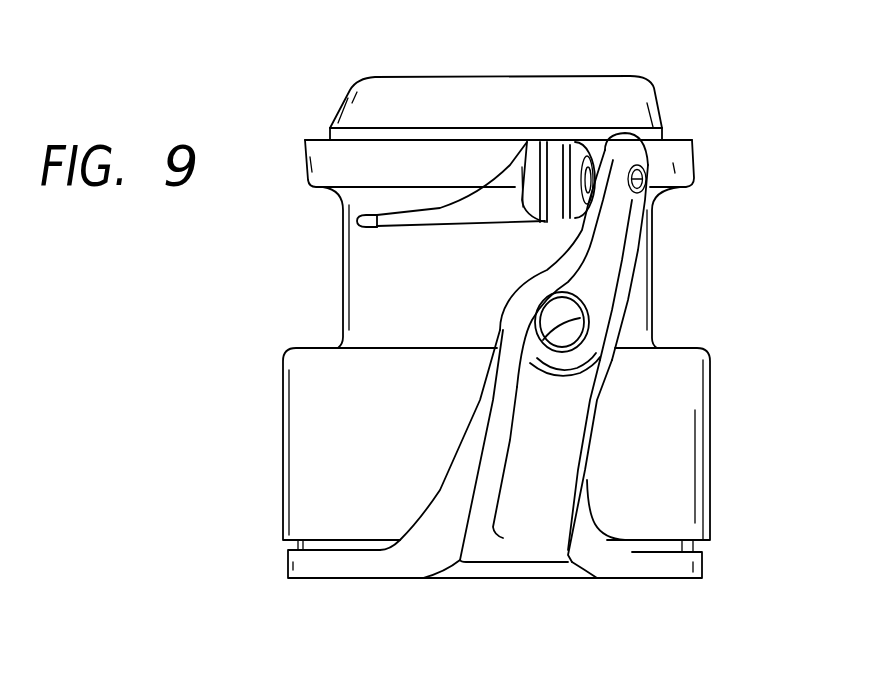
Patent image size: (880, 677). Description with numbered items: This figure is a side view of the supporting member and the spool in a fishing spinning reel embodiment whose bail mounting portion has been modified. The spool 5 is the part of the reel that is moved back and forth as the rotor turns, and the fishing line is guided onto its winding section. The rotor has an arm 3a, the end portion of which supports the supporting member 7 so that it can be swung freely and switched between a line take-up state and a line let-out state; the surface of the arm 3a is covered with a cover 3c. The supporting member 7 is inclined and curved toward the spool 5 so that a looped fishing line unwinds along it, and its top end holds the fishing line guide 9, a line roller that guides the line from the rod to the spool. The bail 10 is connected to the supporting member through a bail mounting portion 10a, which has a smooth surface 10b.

The arm 3a is at (447, 497).
The cover 3c is at (565, 468).
The spool 5 is at (690, 392).
The supporting member 7 is at (610, 257).
The fishing line guide 9 is at (583, 168).
The bail 10 is at (360, 218).
The bail mounting portion 10a is at (437, 213).
The smooth surface 10b is at (490, 172).